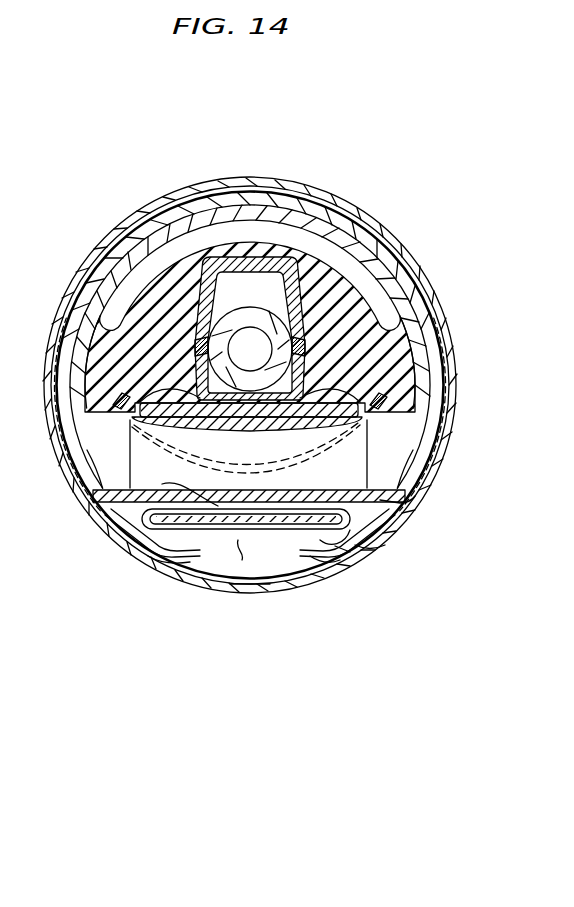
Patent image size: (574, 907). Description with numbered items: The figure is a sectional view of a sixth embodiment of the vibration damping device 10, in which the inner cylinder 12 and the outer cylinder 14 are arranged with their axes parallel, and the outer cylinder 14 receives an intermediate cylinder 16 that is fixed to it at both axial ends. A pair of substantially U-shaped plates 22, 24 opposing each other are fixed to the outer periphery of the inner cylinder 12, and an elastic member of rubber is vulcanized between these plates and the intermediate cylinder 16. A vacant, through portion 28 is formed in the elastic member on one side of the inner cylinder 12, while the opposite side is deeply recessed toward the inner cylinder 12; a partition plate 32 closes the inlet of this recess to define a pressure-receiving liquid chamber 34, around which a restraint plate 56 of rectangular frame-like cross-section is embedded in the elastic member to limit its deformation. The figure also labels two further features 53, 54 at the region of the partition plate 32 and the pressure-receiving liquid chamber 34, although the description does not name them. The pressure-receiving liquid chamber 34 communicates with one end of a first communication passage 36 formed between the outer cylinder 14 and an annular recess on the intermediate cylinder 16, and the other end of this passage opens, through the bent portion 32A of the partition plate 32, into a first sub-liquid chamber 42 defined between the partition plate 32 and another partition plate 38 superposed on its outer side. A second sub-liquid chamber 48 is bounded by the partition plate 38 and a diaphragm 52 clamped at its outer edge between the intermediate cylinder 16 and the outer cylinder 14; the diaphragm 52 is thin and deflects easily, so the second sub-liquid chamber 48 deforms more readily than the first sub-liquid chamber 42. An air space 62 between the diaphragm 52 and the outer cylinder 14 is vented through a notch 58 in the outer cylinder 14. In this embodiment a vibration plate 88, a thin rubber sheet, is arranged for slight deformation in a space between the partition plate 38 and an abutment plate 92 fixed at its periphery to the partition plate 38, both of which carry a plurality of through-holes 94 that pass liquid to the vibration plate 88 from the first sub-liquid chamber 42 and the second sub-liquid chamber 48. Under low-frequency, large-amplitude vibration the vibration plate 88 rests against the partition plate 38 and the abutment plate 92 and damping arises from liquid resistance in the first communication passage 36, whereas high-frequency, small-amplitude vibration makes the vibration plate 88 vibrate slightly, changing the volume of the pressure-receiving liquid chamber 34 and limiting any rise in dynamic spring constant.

The vibration damping device 10 is at (462, 170).
The inner cylinder 12 is at (248, 316).
The outer cylinder 14 is at (443, 432).
The intermediate cylinder 16 is at (153, 242).
The U-shaped plate 22 is at (290, 378).
The U-shaped plate 24 is at (290, 262).
The vacant, through portion 28 is at (270, 236).
The partition plate 32 is at (105, 520).
The bent portion 32A is at (390, 498).
The pressure-receiving liquid chamber 34 is at (258, 461).
The first communication passage 36 is at (405, 283).
The partition plate 38 is at (378, 548).
The first sub-liquid chamber 42 is at (388, 500).
The second sub-liquid chamber 48 is at (122, 558).
The diaphragm 52 is at (323, 560).
The plate upper layer 53 is at (212, 410).
The plate lower layer 54 is at (272, 432).
The restraint plate 56 is at (440, 372).
The notch 58 is at (250, 592).
The air space 62 is at (293, 578).
The vibration plate 88 is at (153, 553).
The abutment plate 92 is at (343, 550).
The through-holes 94 is at (243, 523).